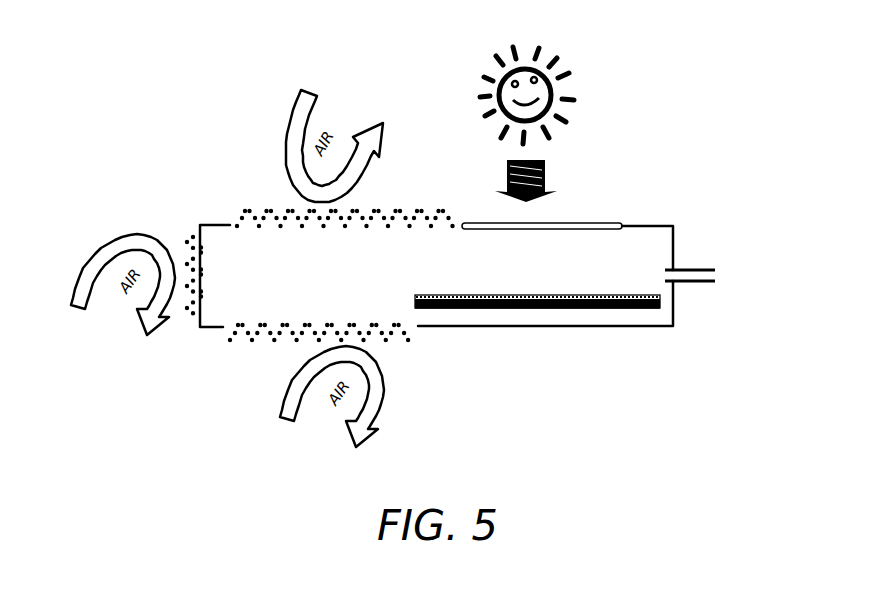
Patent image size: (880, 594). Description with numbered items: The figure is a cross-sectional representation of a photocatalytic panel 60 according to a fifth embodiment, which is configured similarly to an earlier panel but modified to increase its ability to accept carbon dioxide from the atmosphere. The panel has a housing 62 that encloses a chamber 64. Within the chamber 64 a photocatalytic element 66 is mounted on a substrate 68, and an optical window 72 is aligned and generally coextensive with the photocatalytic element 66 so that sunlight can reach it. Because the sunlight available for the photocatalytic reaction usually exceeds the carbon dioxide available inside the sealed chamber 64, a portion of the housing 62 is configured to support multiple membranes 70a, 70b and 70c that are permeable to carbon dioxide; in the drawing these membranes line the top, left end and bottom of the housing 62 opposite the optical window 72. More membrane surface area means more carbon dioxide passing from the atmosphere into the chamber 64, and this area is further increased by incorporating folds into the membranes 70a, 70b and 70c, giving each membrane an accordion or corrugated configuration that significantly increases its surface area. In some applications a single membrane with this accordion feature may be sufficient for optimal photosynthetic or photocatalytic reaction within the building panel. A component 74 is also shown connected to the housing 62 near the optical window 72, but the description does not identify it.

The photocatalytic panel 60 is at (478, 280).
The housing 62 is at (673, 310).
The chamber 64 is at (398, 278).
The photocatalytic element 66 is at (541, 295).
The substrate 68 is at (445, 309).
The membrane 70a is at (316, 227).
The membrane 70b is at (201, 277).
The membrane 70c is at (230, 343).
The optical window 72 is at (586, 222).
The capacitor 74 is at (697, 268).